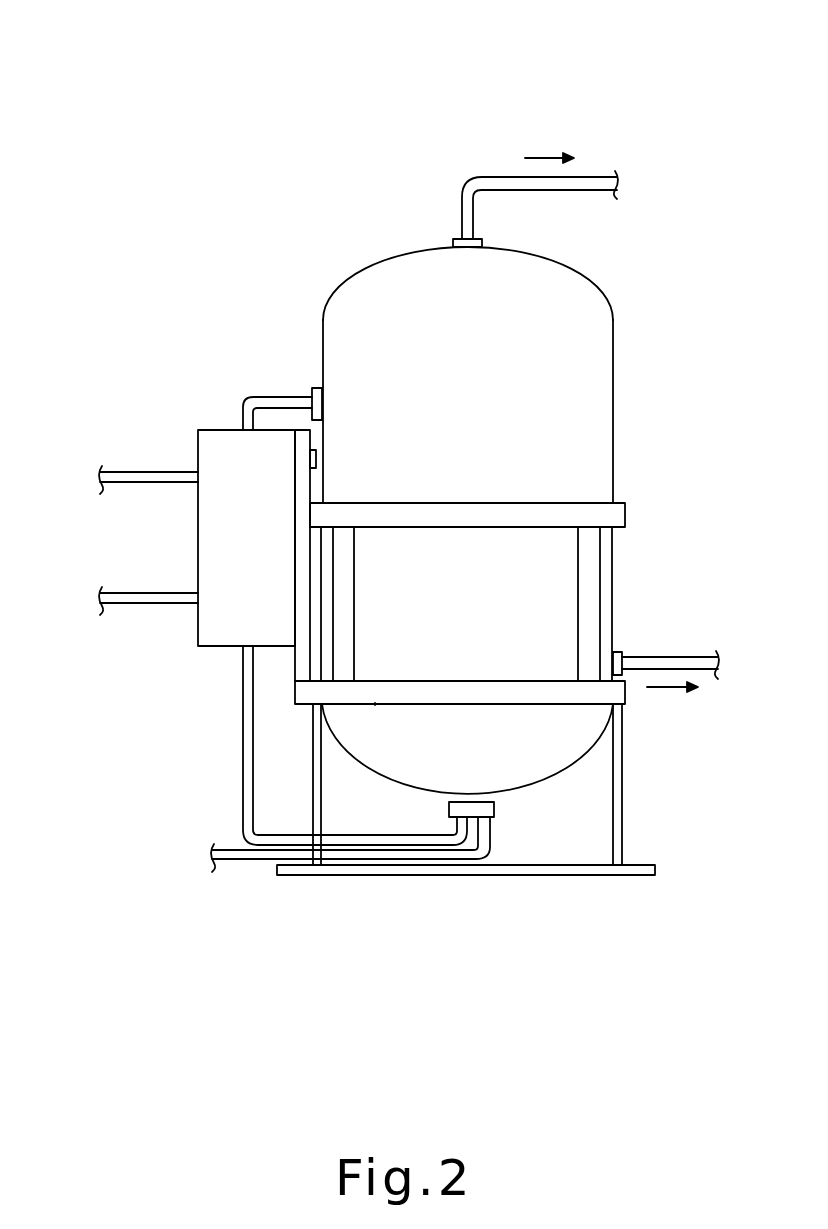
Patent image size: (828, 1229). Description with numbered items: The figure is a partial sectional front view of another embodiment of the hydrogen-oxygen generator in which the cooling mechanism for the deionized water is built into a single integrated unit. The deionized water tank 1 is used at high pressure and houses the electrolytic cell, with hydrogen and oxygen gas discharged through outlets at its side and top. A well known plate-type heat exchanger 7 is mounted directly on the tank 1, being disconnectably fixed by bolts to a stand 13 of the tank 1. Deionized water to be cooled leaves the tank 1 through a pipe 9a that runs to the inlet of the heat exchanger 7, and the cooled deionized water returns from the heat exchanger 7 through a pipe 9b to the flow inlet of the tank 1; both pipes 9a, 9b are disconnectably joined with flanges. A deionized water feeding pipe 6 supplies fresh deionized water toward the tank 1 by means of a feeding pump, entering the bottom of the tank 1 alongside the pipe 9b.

The deionized water tank 1 is at (336, 182).
The deionized water feeding pipe 6 is at (250, 858).
The plate-type heat exchanger 7 is at (222, 540).
The pipe 9a is at (288, 402).
The pipe 9b is at (243, 722).
The stand 13 is at (375, 703).